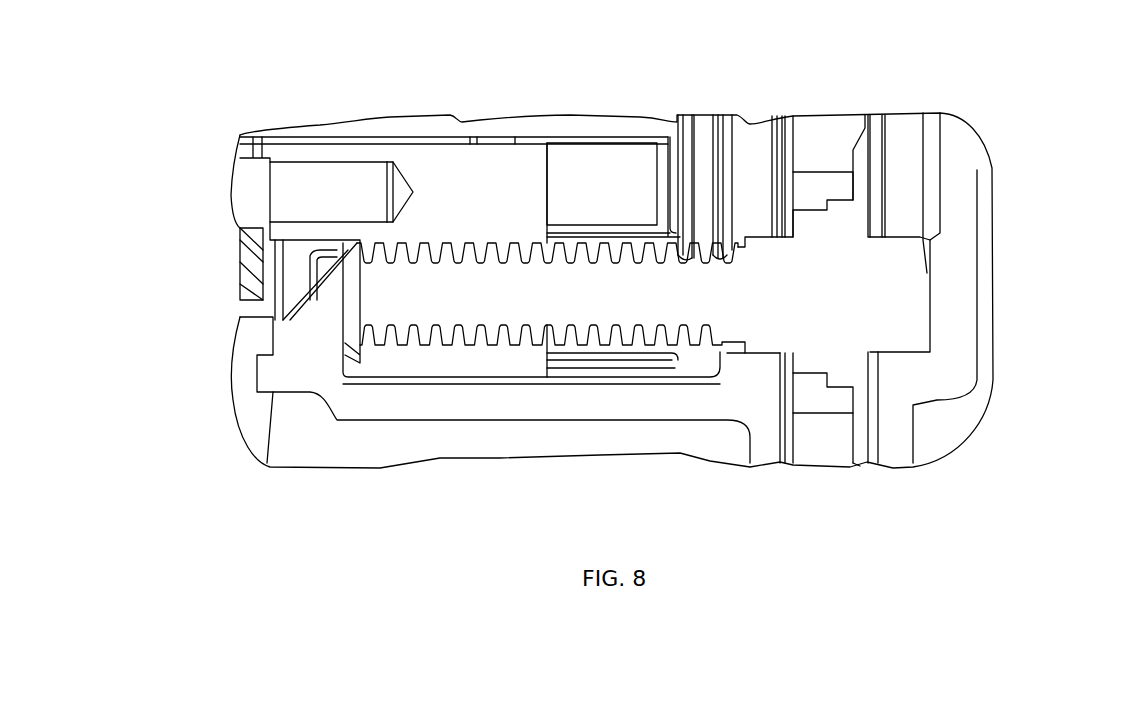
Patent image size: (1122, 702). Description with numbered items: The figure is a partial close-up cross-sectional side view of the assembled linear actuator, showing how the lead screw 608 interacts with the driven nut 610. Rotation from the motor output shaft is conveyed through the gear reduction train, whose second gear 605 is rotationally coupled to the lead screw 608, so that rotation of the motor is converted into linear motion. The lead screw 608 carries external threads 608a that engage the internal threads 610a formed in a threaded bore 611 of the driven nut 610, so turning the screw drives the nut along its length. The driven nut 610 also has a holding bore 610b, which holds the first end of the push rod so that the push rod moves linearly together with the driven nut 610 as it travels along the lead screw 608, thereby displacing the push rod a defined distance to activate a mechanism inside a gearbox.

The second gear 605 is at (822, 437).
The lead screw 608 is at (880, 290).
The external threads 608a is at (620, 247).
The driven nut 610 is at (497, 180).
The internal threads 610a is at (473, 253).
The holding bore 610b is at (336, 162).
The threaded bore 611 is at (540, 253).